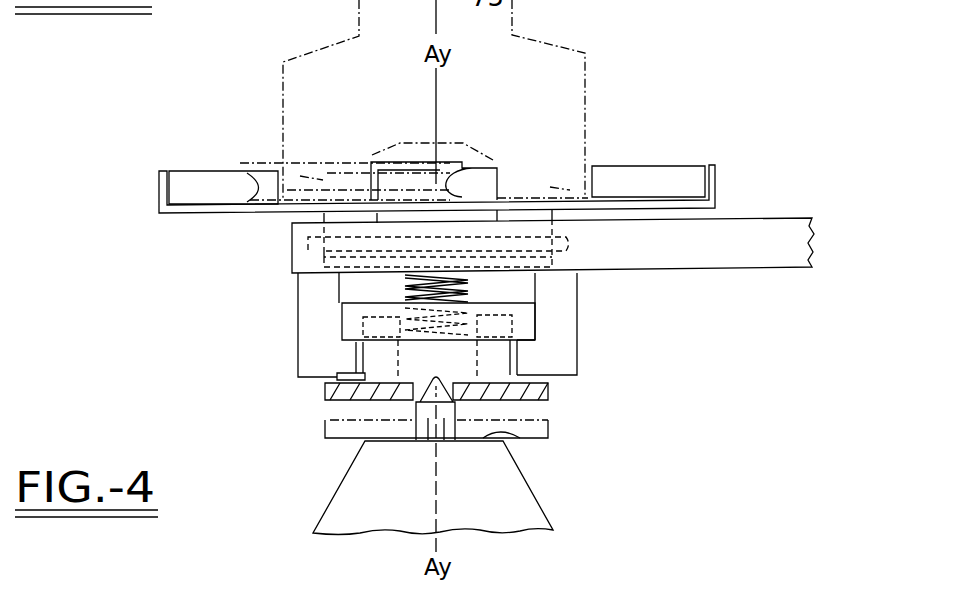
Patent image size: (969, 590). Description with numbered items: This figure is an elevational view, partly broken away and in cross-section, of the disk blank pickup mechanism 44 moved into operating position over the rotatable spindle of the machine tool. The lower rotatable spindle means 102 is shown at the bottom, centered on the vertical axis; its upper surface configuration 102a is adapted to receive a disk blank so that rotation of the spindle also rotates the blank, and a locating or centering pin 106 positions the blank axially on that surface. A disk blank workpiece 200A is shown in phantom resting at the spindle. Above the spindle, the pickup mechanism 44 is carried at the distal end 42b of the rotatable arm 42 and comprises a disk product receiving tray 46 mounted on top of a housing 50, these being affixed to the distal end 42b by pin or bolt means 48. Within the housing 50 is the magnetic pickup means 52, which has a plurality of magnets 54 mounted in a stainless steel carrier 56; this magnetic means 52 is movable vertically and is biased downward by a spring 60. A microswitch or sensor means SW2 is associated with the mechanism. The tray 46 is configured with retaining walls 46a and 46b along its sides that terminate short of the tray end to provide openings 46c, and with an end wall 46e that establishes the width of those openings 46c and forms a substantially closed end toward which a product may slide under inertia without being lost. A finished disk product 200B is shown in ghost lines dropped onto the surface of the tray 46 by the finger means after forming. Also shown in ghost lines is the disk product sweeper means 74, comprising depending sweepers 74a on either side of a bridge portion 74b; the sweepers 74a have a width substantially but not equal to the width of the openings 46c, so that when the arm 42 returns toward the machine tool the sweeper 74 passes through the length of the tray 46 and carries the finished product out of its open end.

The arm 42 is at (747, 270).
The distal end of the arm 42b is at (290, 234).
The disk blank pickup mechanism 44 is at (240, 293).
The disk product receiving tray 46 is at (159, 192).
The retaining wall 46a is at (195, 170).
The retaining wall 46b is at (657, 165).
The openings 46c is at (513, 200).
The end wall 46e is at (470, 170).
The pin or bolt means 48 is at (285, 250).
The housing 50 is at (298, 322).
The magnetic pickup means 52 is at (330, 334).
The magnets 54 is at (512, 317).
The stainless steel carrier 56 is at (527, 328).
The spring 60 is at (470, 283).
The disk product sweeper means 74 is at (547, 42).
The sweepers 74a is at (550, 187).
The bridge portion 74b is at (413, 147).
The lower rotatable spindle means 102 is at (537, 493).
The upper surface configuration of the spindle 102a is at (520, 440).
The locating or centering pin 106 is at (428, 440).
The disk blank workpiece 200A is at (548, 390).
The finished disk product 200B is at (372, 155).
The microswitch or sensor means SW2 is at (350, 376).